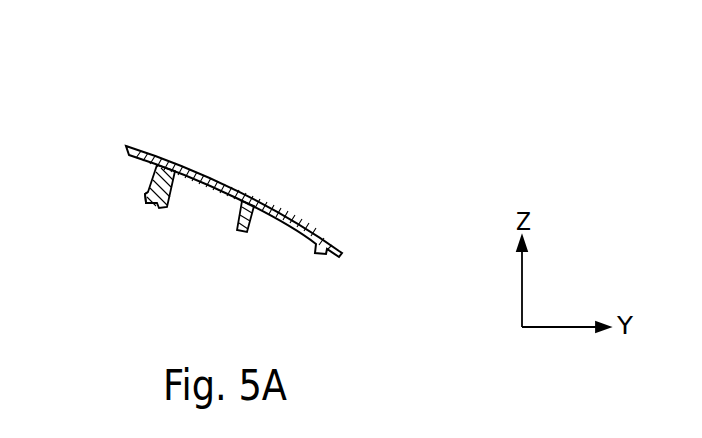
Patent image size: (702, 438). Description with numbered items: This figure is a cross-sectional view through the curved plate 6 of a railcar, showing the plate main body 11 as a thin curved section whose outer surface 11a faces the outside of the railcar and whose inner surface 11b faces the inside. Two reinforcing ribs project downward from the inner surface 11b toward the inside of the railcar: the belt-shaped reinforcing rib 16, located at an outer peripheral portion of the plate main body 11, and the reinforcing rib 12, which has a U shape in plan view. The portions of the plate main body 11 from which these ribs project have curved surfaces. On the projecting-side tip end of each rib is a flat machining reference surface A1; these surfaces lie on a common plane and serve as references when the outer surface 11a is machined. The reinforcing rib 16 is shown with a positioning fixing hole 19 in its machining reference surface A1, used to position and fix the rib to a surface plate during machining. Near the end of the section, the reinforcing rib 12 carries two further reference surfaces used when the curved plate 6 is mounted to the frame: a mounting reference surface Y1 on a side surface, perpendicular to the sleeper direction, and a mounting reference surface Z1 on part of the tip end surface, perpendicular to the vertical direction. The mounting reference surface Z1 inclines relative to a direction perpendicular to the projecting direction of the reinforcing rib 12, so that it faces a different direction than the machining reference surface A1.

The curved plate 6 is at (230, 140).
The plate main body 11 is at (292, 210).
The outer surface 11a is at (164, 160).
The inner surface 11b is at (201, 181).
The reinforcing rib 12 is at (241, 210).
The belt-shaped reinforcing rib 16 is at (152, 181).
The positioning fixing hole 19 is at (146, 204).
The machining reference surface A1 is at (161, 209).
The mounting reference surface Y1 is at (316, 254).
The mounting reference surface Z1 is at (323, 256).